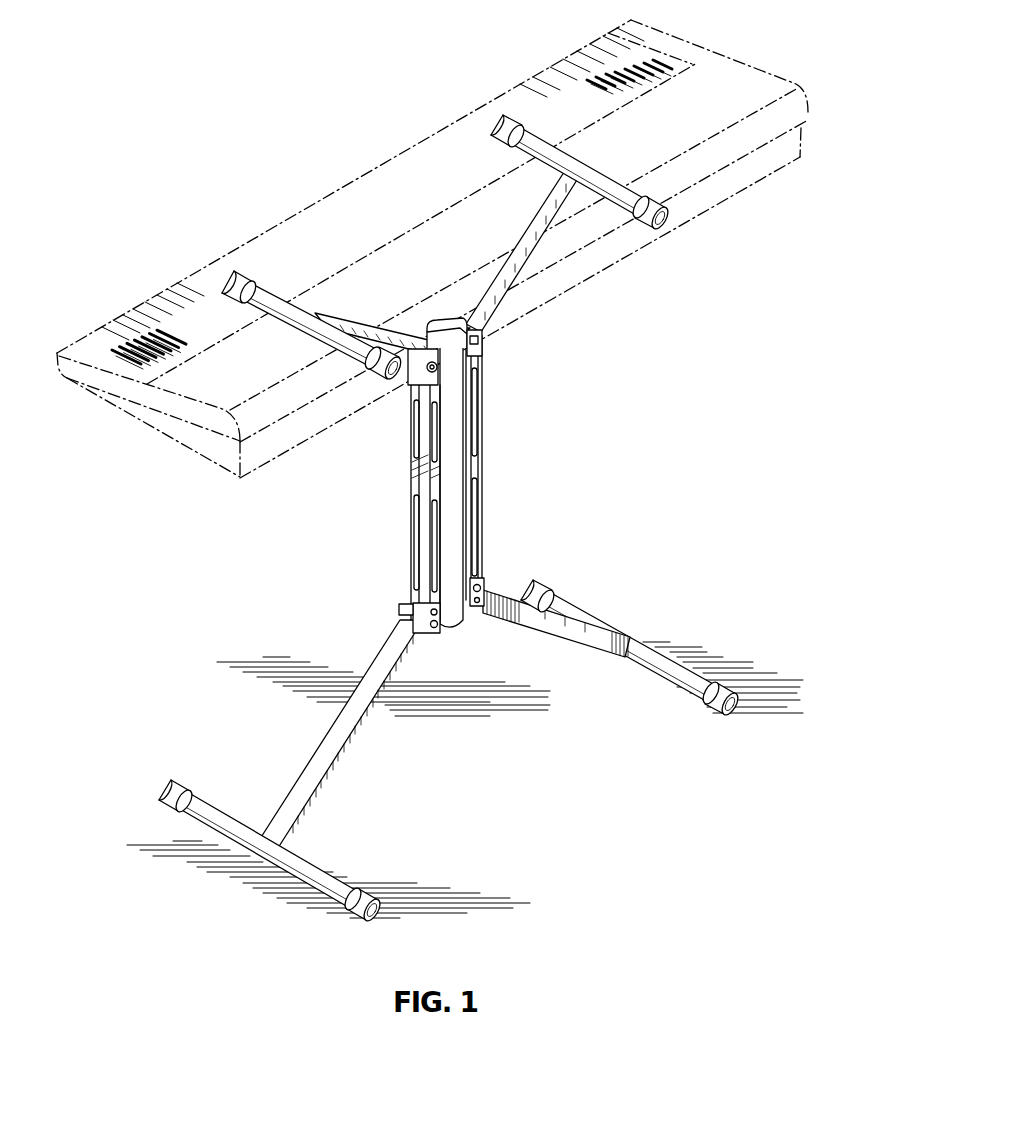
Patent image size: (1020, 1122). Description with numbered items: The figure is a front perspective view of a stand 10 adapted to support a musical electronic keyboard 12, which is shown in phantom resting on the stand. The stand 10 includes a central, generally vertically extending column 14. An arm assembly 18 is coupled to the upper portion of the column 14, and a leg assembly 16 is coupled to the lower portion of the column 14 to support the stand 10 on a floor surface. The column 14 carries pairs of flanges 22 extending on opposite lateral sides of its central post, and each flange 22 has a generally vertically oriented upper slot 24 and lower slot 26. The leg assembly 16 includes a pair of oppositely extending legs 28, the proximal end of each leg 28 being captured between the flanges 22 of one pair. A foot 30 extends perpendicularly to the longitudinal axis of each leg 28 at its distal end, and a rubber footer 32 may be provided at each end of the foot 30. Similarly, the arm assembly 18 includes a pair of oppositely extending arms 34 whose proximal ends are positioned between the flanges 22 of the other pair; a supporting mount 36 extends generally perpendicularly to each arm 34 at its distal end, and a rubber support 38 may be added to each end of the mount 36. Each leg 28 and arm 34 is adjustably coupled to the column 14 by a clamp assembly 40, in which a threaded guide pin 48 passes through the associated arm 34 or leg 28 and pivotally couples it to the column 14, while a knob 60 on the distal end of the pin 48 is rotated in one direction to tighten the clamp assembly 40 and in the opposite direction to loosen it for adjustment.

The stand 10 is at (664, 422).
The musical electronic keyboard 12 is at (720, 55).
The column 14 is at (442, 321).
The leg assembly 16 is at (434, 734).
The arm assembly 18 is at (444, 226).
The flanges 22 is at (443, 477).
The upper slot 24 is at (420, 424).
The lower slot 26 is at (432, 515).
The legs 28 is at (573, 612).
The foot 30 is at (651, 650).
The rubber footer 32 is at (534, 578).
The arms 34 is at (350, 327).
The supporting mount 36 is at (260, 284).
The rubber support 38 is at (501, 117).
The clamp assembly 40 is at (479, 584).
The guide pin 48 is at (483, 350).
The knob 60 is at (402, 607).